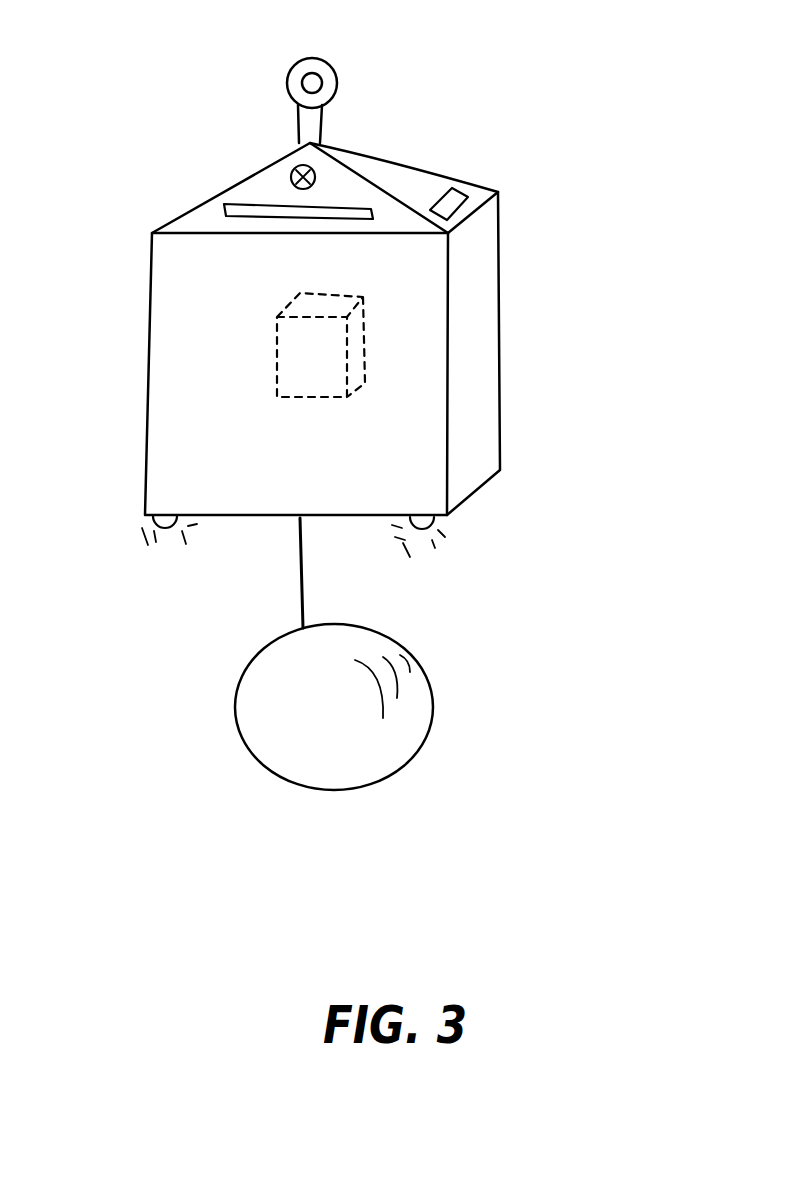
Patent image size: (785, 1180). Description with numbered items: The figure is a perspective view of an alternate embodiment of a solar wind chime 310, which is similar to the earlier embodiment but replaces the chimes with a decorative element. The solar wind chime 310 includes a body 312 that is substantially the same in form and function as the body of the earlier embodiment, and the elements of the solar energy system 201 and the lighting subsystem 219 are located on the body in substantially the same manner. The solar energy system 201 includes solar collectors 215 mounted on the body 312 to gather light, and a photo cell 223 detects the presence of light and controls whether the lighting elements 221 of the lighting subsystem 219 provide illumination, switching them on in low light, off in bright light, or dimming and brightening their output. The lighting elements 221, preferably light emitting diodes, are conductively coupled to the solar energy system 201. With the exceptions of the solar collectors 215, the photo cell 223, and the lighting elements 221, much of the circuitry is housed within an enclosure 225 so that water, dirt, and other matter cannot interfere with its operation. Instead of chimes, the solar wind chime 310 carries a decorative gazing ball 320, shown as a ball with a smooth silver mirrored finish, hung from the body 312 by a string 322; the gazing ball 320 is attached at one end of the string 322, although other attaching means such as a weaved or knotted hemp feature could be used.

The solar wind chime 310 is at (605, 113).
The body 312 is at (508, 293).
The photo cell 223 is at (313, 168).
The solar collectors 215 is at (246, 210).
The enclosure 225 is at (305, 355).
The solar energy system 201 is at (270, 383).
The lighting subsystem 219 is at (152, 525).
The lighting elements 221 is at (167, 535).
The string 322 is at (297, 567).
The gazing ball 320 is at (433, 700).